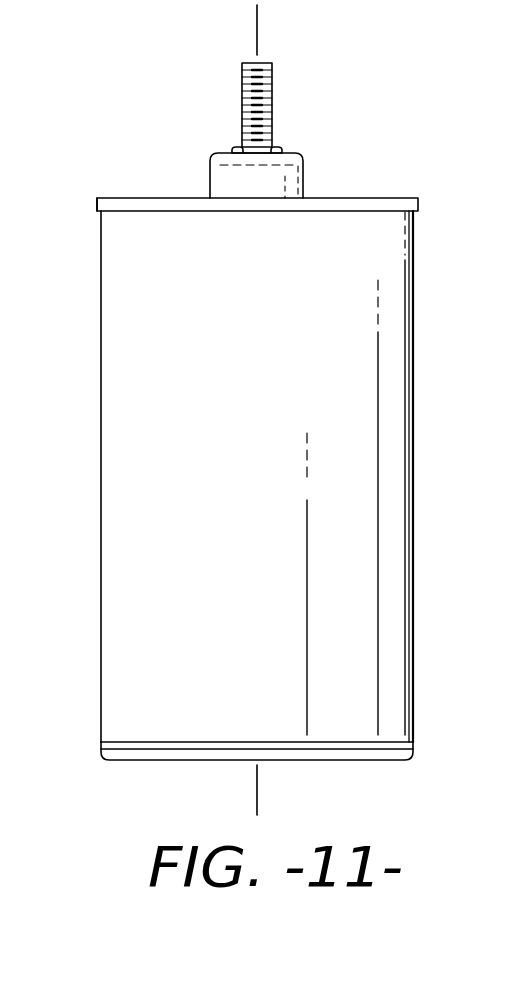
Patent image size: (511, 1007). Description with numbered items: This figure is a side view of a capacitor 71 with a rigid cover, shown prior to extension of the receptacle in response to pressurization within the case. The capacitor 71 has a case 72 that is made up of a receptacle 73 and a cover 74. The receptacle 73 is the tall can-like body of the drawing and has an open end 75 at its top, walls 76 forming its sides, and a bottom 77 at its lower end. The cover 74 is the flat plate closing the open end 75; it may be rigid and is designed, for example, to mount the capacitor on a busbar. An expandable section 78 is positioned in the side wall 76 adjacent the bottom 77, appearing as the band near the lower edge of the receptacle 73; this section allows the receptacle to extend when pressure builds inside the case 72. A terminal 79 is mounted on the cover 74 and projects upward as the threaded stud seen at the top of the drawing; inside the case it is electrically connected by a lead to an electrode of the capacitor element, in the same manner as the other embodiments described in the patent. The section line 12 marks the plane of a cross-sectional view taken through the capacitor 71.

The section line 12- 12 is at (277, 23).
The capacitor 71 is at (412, 315).
The case 72 is at (412, 430).
The receptacle 73 is at (390, 578).
The cover 74 is at (350, 197).
The open end 75 is at (128, 197).
The walls 76 is at (127, 480).
The bottom 77 is at (338, 762).
The expandable section 78 is at (415, 745).
The terminal 79 is at (236, 150).